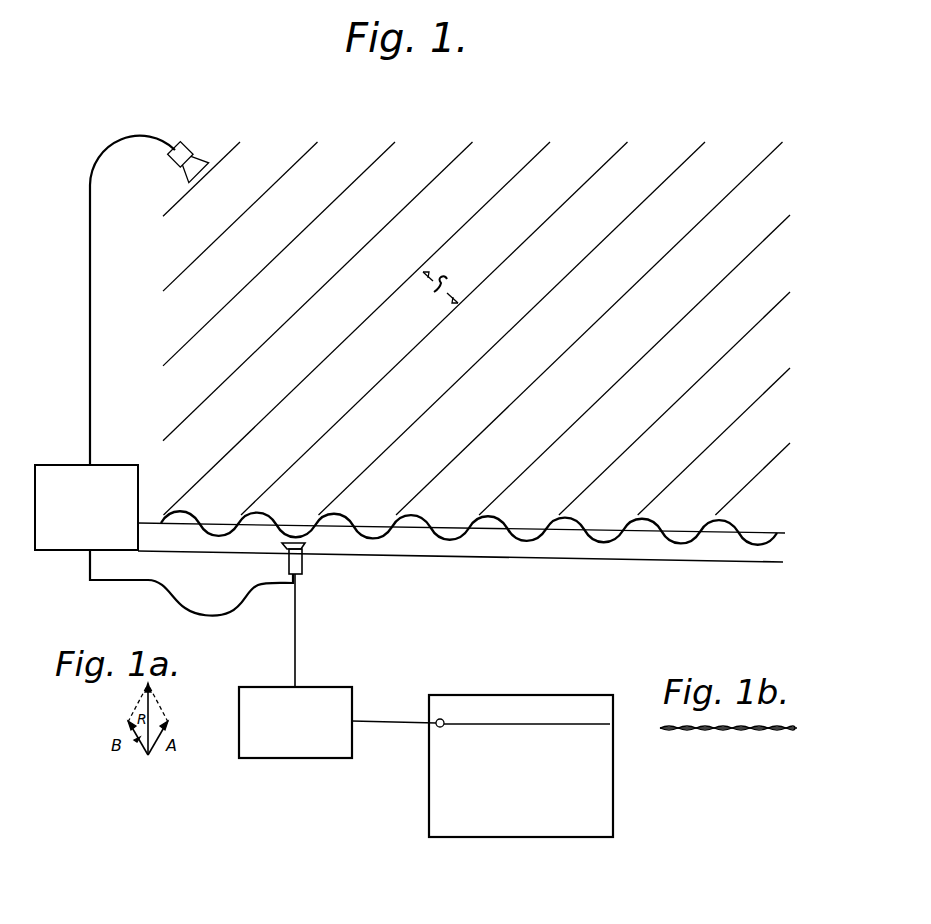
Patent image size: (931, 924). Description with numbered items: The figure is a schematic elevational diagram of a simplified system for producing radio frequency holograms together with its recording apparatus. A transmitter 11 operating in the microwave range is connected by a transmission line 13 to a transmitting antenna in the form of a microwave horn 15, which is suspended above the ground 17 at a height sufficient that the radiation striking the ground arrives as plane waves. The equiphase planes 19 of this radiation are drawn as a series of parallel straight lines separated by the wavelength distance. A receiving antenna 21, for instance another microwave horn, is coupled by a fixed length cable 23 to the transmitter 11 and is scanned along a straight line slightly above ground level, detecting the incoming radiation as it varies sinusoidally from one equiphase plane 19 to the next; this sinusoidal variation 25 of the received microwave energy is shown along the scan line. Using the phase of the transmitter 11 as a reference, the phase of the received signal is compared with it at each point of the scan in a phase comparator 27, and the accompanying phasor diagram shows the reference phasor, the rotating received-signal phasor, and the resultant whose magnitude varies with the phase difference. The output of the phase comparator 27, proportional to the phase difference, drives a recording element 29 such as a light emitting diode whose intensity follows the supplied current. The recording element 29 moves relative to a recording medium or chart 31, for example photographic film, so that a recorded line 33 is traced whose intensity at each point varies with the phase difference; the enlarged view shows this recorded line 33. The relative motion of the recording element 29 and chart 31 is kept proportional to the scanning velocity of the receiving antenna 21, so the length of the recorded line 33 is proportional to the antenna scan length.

In FIG. 1, the transmitter 11 is at (50, 463).
In FIG. 1, the transmission line 13 is at (88, 257).
In FIG. 1, the microwave horn 15 is at (188, 157).
In FIG. 1, the ground 17 is at (783, 562).
In FIG. 1, the equiphase planes 19 is at (447, 392).
In FIG. 1, the receiving antenna 21 is at (303, 567).
In FIG. 1, the fixed length cable 23 is at (143, 583).
In FIG. 1, the sinusoidal variation 25 is at (277, 518).
In FIG. 1, the phase comparator 27 is at (337, 686).
In FIG. 1, the recording element 29 is at (436, 728).
In FIG. 1, the recording medium or chart 31 is at (495, 700).
In FIG. 1, the recorded line 33 is at (542, 727).
In FIG. 1B, the recorded line 33 is at (745, 732).